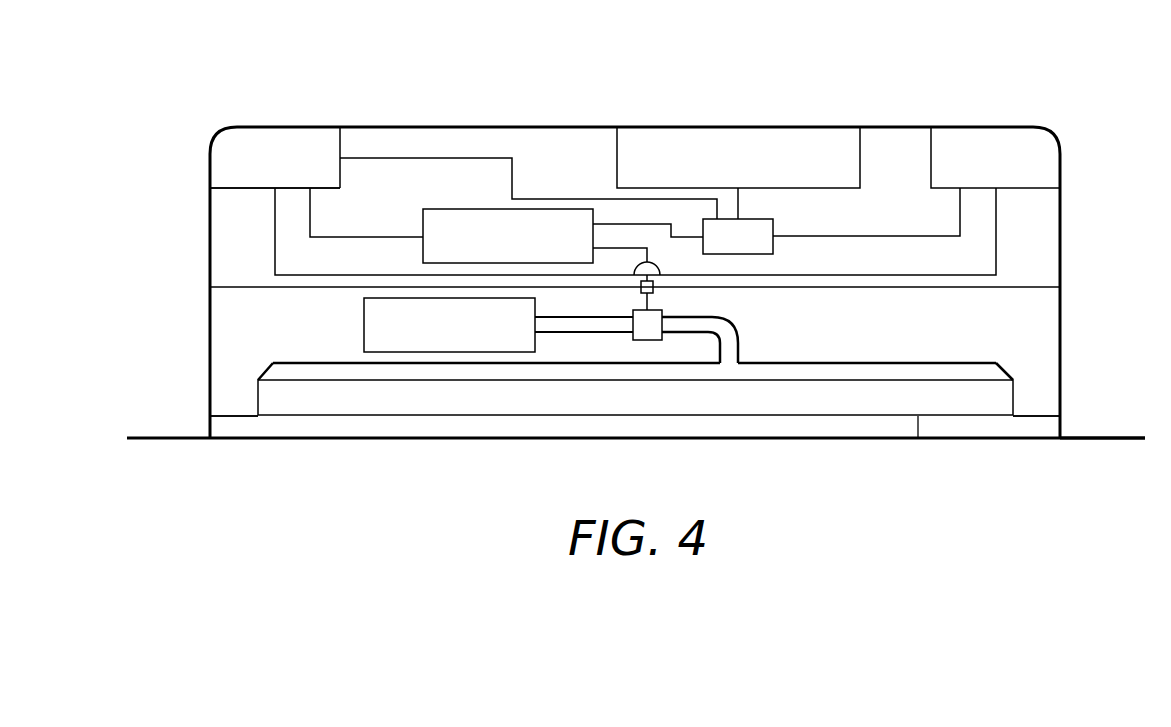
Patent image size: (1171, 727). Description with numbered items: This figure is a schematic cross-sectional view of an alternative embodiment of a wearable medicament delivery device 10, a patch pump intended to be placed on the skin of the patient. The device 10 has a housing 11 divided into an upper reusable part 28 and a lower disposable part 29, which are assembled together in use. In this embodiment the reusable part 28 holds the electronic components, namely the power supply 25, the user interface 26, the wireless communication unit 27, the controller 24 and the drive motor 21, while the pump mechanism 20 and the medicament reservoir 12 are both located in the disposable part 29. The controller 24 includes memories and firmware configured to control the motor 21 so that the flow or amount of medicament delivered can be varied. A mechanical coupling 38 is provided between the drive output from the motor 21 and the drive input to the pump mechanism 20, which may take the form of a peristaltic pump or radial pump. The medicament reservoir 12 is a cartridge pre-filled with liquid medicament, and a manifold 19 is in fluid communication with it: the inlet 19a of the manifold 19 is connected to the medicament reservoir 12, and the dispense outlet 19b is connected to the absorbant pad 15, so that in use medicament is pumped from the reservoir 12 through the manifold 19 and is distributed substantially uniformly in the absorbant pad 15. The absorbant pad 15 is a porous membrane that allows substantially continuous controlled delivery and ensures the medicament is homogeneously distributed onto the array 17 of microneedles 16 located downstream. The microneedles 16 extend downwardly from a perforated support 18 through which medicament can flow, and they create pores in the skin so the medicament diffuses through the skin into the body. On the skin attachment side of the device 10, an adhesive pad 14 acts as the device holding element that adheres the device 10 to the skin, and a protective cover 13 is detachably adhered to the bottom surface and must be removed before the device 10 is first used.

The device 10 is at (216, 85).
The housing 11 is at (208, 257).
The medicament reservoir 12 is at (372, 315).
The protective cover 13 is at (1110, 443).
The adhesive pad 14 is at (235, 431).
The absorbant pad 15 is at (1003, 398).
The microneedles 16 is at (507, 440).
The array 17 is at (435, 441).
The support 18 is at (925, 418).
The manifold 19 is at (733, 338).
The inlet 19a is at (538, 323).
The dispense outlet 19b is at (998, 369).
The pump mechanism 20 is at (652, 332).
The motor 21 is at (569, 220).
The controller 24 is at (765, 227).
The power supply 25 is at (303, 133).
The user interface 26 is at (737, 137).
The wireless communication unit 27 is at (966, 137).
The reusable part 28 is at (208, 199).
The disposable part 29 is at (208, 352).
The mechanical coupling 38 is at (654, 292).